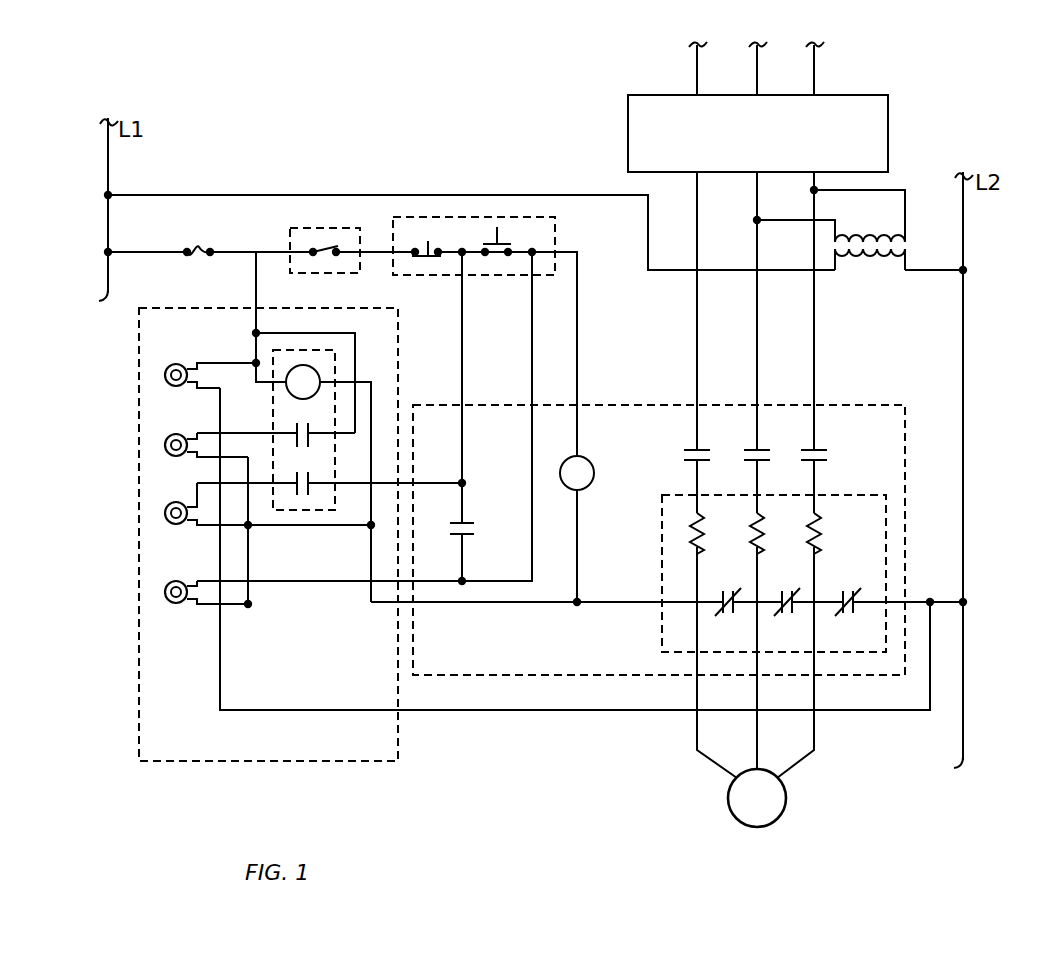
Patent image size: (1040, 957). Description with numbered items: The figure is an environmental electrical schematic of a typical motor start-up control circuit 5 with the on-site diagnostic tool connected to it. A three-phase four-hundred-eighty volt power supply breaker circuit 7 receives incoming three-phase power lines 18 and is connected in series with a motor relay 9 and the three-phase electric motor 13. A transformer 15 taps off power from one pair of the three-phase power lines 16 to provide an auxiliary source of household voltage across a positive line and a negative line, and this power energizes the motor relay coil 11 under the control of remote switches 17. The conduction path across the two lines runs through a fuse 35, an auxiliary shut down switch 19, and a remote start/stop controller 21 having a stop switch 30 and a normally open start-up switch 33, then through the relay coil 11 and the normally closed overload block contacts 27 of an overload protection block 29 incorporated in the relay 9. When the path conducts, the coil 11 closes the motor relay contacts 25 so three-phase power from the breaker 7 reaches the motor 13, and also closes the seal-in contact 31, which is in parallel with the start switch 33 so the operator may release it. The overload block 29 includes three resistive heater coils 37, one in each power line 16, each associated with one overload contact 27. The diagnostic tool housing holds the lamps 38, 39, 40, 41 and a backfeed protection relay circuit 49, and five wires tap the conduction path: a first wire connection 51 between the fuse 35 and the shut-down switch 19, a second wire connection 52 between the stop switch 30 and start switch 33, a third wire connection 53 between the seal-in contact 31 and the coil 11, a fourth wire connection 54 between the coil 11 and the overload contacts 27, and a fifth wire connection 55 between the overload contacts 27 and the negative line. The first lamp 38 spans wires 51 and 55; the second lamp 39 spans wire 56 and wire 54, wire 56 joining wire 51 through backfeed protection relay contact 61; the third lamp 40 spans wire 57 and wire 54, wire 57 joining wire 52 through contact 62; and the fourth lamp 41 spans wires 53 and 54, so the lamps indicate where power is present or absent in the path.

The motor start-up control circuit 5 is at (628, 755).
The three-phase 480 volt power supply breaker circuit 7 is at (888, 122).
The motor relay 9 is at (878, 402).
The motor relay coil 11 is at (588, 487).
The three-phase electric motor 13 is at (788, 794).
The transformer 15 is at (906, 226).
The three-phase power lines 16 is at (814, 325).
The remote switches 17 is at (420, 113).
The three-phase power lines 18 is at (813, 52).
The auxiliary shut down switch 19 is at (291, 214).
The remote start/stop controller 21 is at (509, 246).
The motor relay contacts 25 is at (710, 444).
The overload block contacts 27 is at (843, 615).
The overload protection block 29 is at (886, 548).
The stop switch 30 is at (428, 226).
The seal-in contact 31 is at (470, 526).
The start-up switch 33 is at (498, 230).
The fuse 35 is at (202, 252).
The resistive heater coils 37 is at (701, 518).
The first lamp 38 is at (166, 369).
The second lamp 39 is at (165, 446).
The third lamp 40 is at (164, 520).
The fourth lamp 41 is at (164, 598).
The backfeed protection relay circuit 49 is at (316, 456).
The first wire connection 51 is at (256, 281).
The second wire connection 52 is at (430, 483).
The third wire connection 53 is at (322, 582).
The fourth wire connection 54 is at (450, 602).
The fifth wire connection 55 is at (452, 710).
The wire connection 56 is at (206, 432).
The wire connection 57 is at (206, 483).
The backfeed protection relay contact 61 is at (297, 426).
The backfeed protection relay contact 62 is at (303, 496).